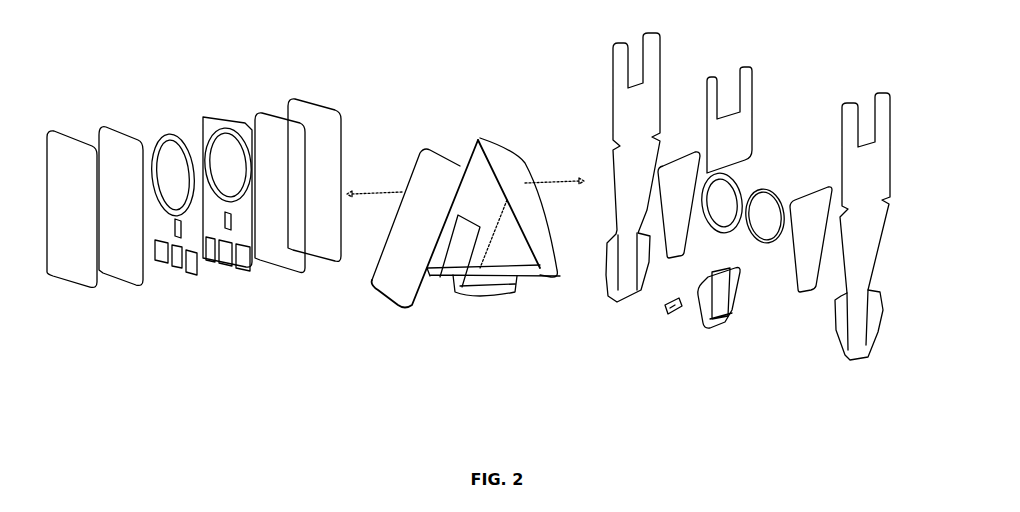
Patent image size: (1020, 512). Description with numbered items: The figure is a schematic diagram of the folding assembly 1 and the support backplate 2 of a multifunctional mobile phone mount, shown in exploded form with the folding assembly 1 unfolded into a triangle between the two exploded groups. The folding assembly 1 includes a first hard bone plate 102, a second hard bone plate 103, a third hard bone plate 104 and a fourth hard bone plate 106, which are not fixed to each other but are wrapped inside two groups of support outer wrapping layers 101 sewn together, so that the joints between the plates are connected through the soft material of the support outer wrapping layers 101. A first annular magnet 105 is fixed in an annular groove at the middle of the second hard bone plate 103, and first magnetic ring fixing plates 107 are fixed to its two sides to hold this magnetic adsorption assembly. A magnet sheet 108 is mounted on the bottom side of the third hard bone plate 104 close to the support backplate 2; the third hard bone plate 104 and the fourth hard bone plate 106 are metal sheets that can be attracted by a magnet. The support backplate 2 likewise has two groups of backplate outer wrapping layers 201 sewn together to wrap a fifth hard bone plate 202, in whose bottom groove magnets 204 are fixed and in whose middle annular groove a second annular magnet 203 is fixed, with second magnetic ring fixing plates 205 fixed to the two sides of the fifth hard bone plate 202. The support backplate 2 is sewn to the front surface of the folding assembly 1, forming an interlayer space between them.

The folding assembly 1 is at (922, 38).
The support backplate 2 is at (100, 93).
The support outer wrapping layers 101 is at (880, 120).
The first hard bone plate 102 is at (745, 90).
The second hard bone plate 103 is at (723, 240).
The third hard bone plate 104 is at (708, 326).
The first annular magnet 105 is at (765, 245).
The fourth hard bone plate 106 is at (720, 305).
The first magnetic ring fixing plates 107 is at (809, 245).
The magnet sheet 108 is at (670, 314).
The backplate outer wrapping layers 201 is at (333, 262).
The fifth hard bone plate 202 is at (213, 118).
The second annular magnet 203 is at (172, 134).
The magnets 204 is at (194, 273).
The second magnetic ring fixing plates 205 is at (102, 268).